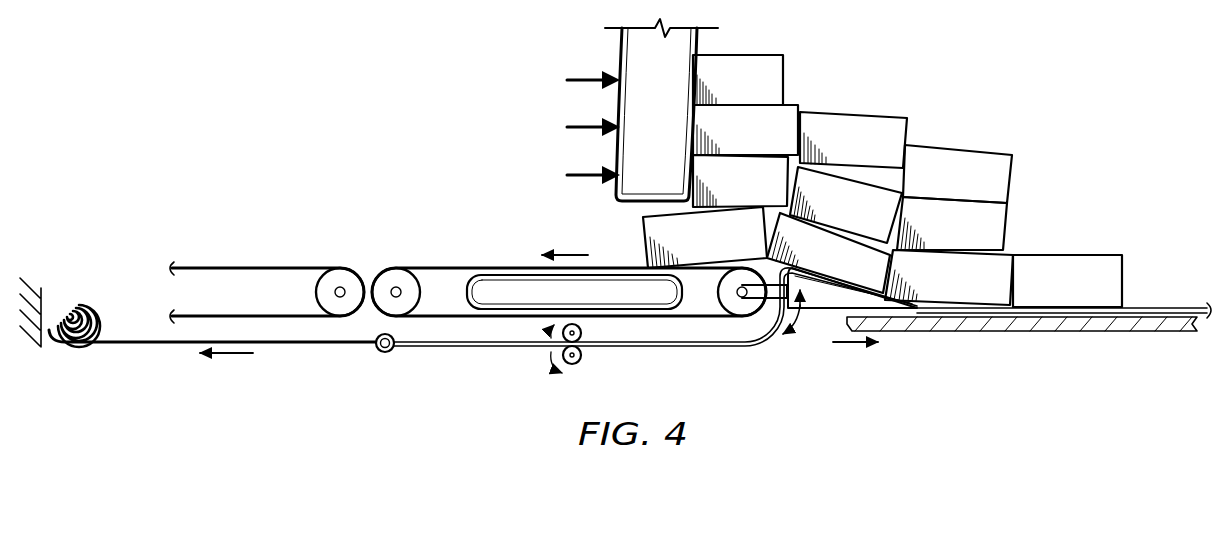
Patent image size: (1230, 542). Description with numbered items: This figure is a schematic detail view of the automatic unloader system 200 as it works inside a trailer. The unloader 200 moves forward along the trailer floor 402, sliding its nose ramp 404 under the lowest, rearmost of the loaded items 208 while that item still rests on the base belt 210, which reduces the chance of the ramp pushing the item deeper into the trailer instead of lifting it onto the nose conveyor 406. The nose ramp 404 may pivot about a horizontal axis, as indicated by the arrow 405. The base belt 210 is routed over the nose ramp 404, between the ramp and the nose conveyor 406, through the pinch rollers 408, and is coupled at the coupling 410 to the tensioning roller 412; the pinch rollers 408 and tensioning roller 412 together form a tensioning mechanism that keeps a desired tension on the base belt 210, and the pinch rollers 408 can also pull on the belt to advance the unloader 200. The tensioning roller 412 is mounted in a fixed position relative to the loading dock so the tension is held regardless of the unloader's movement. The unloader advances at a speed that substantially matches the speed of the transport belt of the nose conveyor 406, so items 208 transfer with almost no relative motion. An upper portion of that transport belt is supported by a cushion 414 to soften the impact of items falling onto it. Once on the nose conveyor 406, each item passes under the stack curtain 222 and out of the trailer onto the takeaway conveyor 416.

The automatic unloader system 200 is at (412, 116).
The loaded items 208 is at (911, 96).
The base belt 210 is at (1155, 305).
The stack curtain 222 is at (673, 123).
The trailer floor 402 is at (1040, 333).
The nose ramp 404 is at (825, 313).
The arrow 405 is at (797, 330).
The nose conveyor 406 is at (433, 267).
The pinch rollers 408 is at (581, 354).
The coupling 410 is at (372, 360).
The tensioning roller 412 is at (120, 346).
The cushion 414 is at (470, 283).
The takeaway conveyor 416 is at (260, 267).